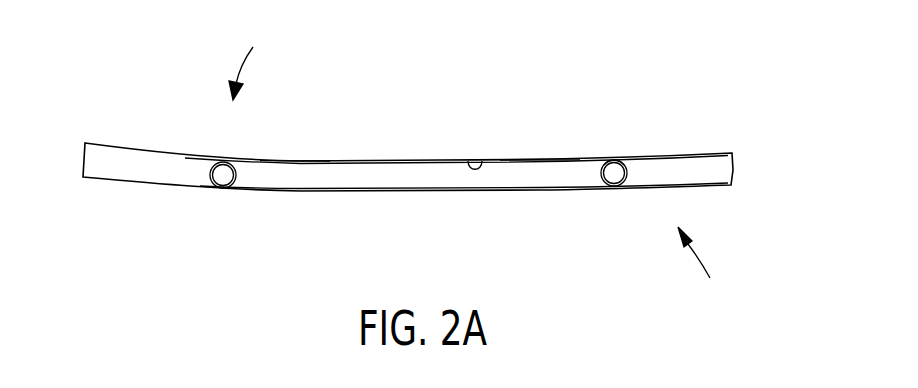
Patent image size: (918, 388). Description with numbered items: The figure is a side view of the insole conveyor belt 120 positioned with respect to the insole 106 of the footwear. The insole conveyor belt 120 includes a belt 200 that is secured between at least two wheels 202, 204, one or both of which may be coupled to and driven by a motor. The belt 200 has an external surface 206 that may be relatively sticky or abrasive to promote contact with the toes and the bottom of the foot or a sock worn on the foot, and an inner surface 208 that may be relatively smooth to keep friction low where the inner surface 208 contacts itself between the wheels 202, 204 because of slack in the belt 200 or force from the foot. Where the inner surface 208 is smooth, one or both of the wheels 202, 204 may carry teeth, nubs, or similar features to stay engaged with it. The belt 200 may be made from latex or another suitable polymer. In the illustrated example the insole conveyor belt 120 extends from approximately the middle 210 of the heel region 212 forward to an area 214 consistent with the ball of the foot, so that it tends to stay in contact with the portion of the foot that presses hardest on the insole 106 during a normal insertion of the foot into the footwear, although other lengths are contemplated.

The insole 106 is at (722, 167).
The belt 200 is at (378, 175).
The wheel 202 is at (225, 177).
The wheel 204 is at (613, 173).
The external surface 206 is at (292, 162).
The inner surface 208 is at (480, 162).
The insole conveyor belt 120 is at (540, 160).
The middle of the heel region 210 is at (613, 162).
The area consistent with the ball of the foot 214 is at (247, 58).
The heel region 212 is at (700, 270).